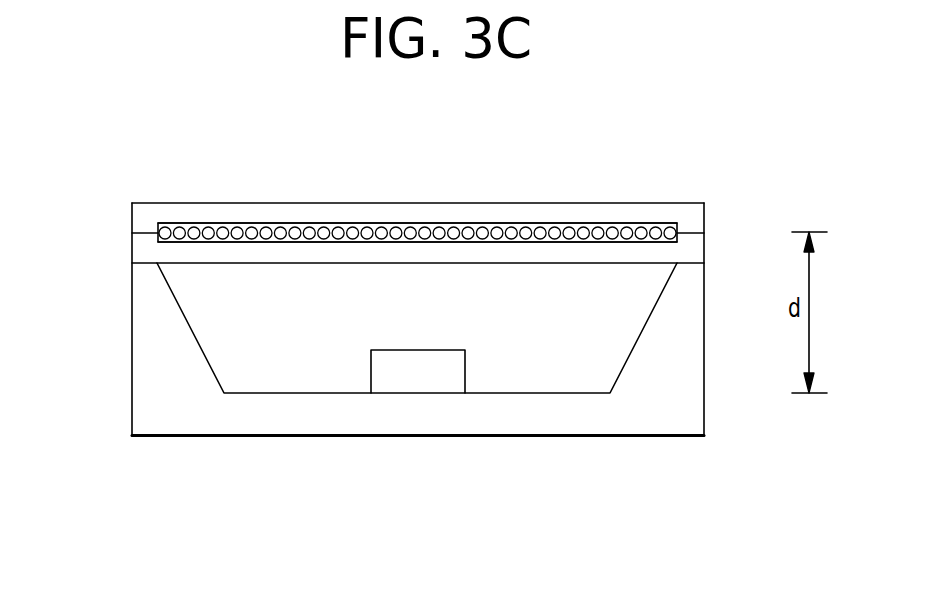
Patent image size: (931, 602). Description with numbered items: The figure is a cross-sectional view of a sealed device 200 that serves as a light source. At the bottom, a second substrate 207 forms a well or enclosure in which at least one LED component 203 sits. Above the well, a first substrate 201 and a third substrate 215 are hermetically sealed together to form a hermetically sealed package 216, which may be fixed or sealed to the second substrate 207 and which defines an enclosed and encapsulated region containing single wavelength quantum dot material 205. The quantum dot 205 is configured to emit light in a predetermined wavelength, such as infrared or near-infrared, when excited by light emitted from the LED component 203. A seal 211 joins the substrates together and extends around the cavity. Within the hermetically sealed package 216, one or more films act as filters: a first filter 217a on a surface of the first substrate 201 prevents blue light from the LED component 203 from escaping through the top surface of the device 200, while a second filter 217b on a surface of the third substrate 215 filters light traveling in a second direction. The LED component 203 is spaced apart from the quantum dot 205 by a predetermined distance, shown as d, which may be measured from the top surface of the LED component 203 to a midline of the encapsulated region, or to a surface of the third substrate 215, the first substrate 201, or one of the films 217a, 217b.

The sealed device 200 is at (128, 160).
The first substrate 201 is at (650, 215).
The LED component 203 is at (438, 387).
The quantum dot 205 is at (333, 228).
The second substrate 207 is at (687, 408).
The seal 211 is at (705, 230).
The third substrate 215 is at (145, 253).
The hermetically sealed package 216 is at (118, 203).
The first filter 217a is at (223, 227).
The second filter 217b is at (468, 242).